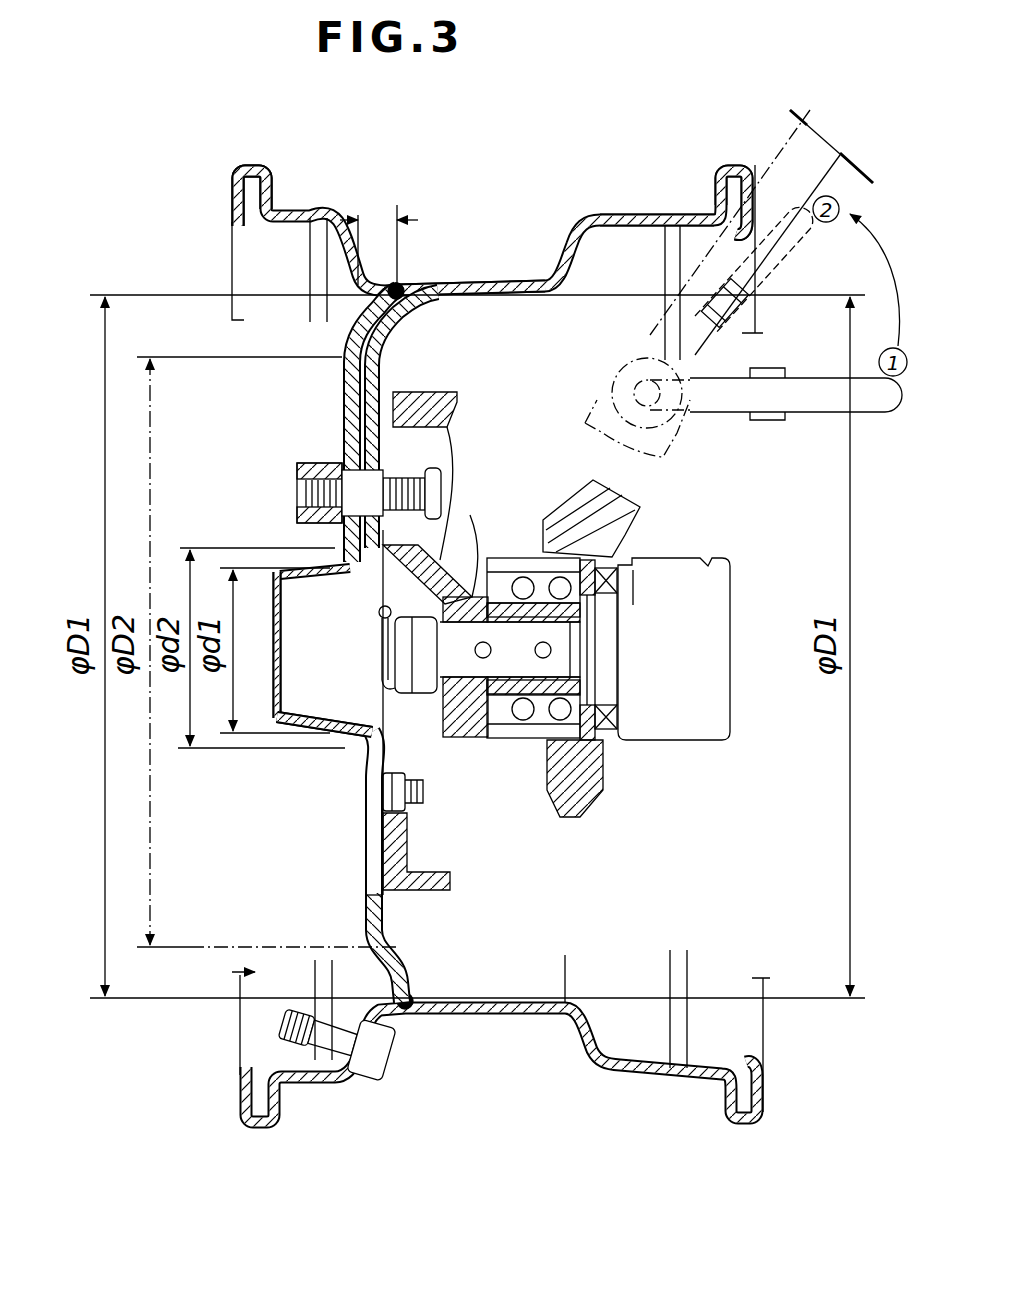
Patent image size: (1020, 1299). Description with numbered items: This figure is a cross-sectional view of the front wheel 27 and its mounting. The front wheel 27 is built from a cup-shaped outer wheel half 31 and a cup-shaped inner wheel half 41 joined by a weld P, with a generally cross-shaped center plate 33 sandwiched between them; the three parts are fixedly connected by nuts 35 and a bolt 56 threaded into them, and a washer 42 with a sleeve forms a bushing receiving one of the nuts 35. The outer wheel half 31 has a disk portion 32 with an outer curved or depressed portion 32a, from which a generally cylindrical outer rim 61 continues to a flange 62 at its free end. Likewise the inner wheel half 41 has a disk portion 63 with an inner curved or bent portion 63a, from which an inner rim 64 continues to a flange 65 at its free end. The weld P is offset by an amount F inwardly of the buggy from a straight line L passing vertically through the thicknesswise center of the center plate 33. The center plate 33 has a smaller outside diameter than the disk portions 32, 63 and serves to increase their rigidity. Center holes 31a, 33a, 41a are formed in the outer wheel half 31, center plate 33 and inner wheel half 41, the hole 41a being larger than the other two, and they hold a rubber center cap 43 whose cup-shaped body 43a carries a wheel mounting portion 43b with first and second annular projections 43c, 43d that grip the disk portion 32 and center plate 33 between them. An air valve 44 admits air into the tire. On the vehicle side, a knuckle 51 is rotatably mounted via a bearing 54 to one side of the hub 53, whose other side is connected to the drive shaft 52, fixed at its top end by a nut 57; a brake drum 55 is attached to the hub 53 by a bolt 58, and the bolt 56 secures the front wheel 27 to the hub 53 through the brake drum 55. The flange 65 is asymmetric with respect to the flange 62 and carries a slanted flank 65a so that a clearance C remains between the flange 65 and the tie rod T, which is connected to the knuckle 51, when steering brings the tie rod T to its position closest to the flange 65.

The front wheel 27 is at (566, 142).
The outer wheel half 31 is at (338, 208).
The center hole of the outer wheel half 31a is at (318, 566).
The disk portion 32 is at (344, 395).
The outer curved or depressed portion 32a is at (370, 322).
The center plate 33 is at (340, 420).
The center hole of the center plate 33a is at (346, 576).
The nuts 35 is at (300, 480).
The inner wheel half 41 is at (524, 279).
The center hole of the inner wheel half 41a is at (430, 582).
The washer 42 is at (342, 463).
The center cap 43 is at (268, 707).
The cup-shaped body 43a is at (283, 735).
The wheel mounting portion 43b is at (344, 752).
The first annular projection 43c is at (342, 742).
The second annular projection 43d is at (416, 746).
The air valve 44 is at (366, 1076).
The knuckle 51 is at (606, 786).
The drive shaft 52 is at (690, 556).
The hub 53 is at (458, 731).
The bearing 54 is at (545, 560).
The brake drum 55 is at (420, 846).
The bolt 56 is at (442, 478).
The nut 57 is at (393, 680).
The bolt 58 is at (432, 798).
The outer rim 61 is at (292, 214).
The flange 62 is at (236, 170).
The disk portion 63 is at (386, 380).
The inner curved or bent portion 63a is at (408, 336).
The inner rim 64 is at (648, 216).
The flange 65 is at (735, 170).
The flank 65a is at (740, 224).
The weld P is at (404, 290).
The straight line L is at (340, 300).
The offset amount F is at (388, 237).
The clearance C is at (835, 146).
The tie rod T is at (794, 262).